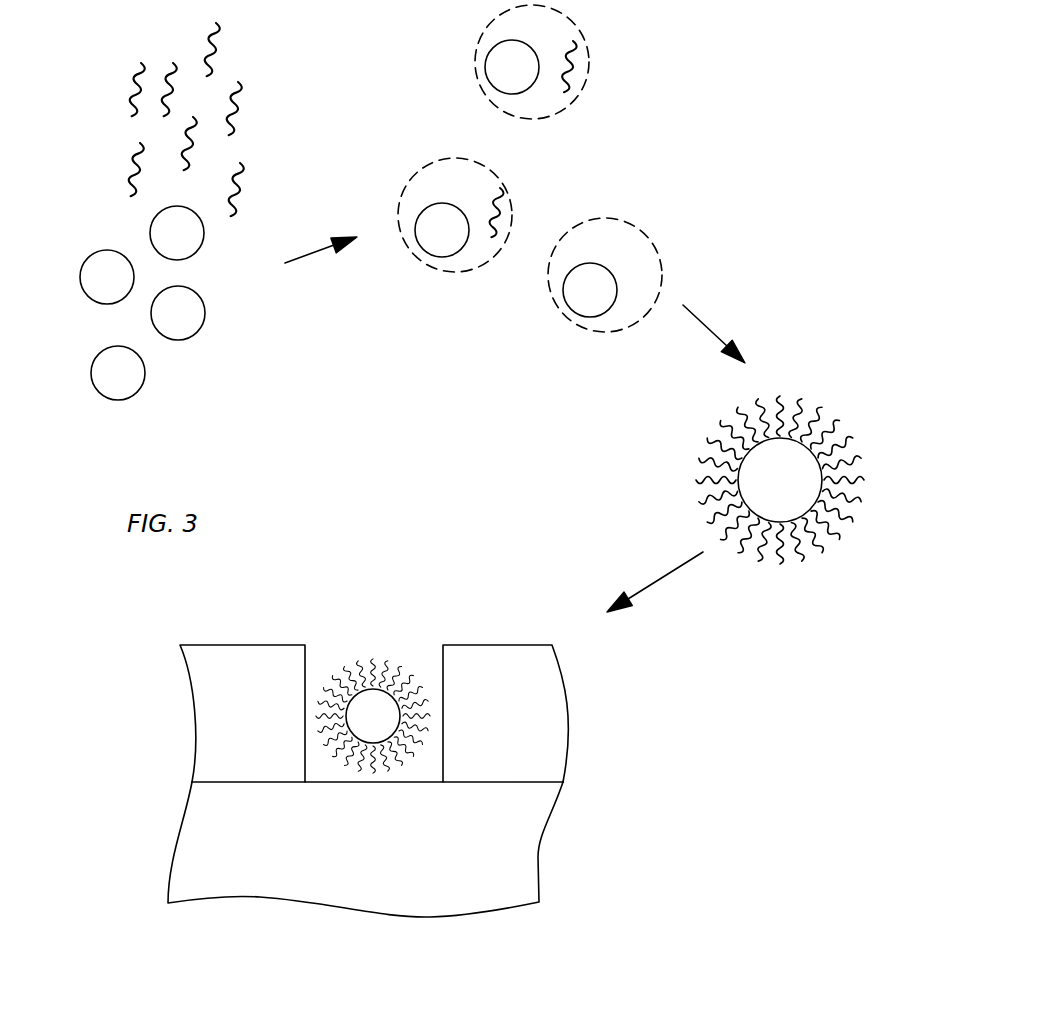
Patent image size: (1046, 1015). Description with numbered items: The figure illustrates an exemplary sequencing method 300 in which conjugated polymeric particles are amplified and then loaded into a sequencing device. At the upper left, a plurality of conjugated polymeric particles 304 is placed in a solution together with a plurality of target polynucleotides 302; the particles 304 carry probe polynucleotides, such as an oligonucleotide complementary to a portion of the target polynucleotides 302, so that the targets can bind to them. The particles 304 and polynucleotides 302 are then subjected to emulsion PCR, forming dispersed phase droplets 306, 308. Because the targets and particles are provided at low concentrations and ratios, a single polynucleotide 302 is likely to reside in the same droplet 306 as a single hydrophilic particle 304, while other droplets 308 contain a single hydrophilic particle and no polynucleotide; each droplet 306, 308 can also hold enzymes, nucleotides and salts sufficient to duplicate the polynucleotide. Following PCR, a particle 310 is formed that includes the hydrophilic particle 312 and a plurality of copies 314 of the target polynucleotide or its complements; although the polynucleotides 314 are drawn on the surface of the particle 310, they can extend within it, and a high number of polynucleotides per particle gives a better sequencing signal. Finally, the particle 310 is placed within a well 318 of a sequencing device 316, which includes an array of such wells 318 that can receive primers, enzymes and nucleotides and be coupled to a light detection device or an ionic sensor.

The process for forming coated nanoparticle on substrate 300 is at (800, 45).
The target polynucleotides 302 is at (127, 78).
The conjugated polymeric particles 304 is at (207, 347).
The dispersed phase droplet 306 is at (425, 162).
The dispersed phase droplet 308 is at (660, 253).
The particle 310 is at (878, 430).
The hydrophilic particle 312 is at (790, 473).
The copies of the target polynucleotide 314 is at (697, 480).
The sequencing device 316 is at (570, 772).
The well 318 is at (423, 648).